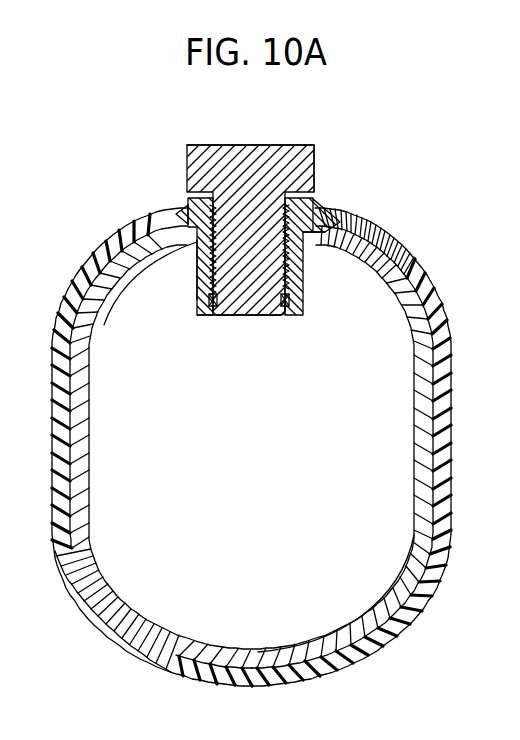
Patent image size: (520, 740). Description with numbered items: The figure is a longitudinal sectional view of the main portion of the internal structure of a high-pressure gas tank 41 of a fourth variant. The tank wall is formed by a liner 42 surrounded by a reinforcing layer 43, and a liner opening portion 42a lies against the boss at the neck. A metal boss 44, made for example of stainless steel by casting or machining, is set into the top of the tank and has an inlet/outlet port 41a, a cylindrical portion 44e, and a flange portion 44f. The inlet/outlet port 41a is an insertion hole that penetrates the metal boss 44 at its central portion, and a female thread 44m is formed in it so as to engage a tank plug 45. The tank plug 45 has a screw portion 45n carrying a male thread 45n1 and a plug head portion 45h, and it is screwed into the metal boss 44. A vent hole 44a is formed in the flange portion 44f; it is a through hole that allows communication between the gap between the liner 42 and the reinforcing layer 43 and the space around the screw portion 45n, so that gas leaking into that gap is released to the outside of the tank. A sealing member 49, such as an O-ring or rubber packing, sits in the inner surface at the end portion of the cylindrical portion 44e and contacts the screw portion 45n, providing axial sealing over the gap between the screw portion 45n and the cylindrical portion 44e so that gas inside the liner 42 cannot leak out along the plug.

The high-pressure gas tank 41 is at (276, 447).
The inlet/outlet port 41a is at (218, 318).
The liner 42 is at (413, 416).
The liner opening portion 42a is at (310, 247).
The reinforcing layer 43 is at (451, 414).
The metal boss 44 is at (242, 246).
The vent hole 44a is at (178, 213).
The cylindrical portion 44e is at (197, 268).
The flange portion 44f is at (326, 212).
The female thread 44m is at (205, 304).
The tank plug 45 is at (246, 257).
The plug head portion 45h is at (190, 168).
The screw portion 45n is at (248, 317).
The male thread 45n1 is at (284, 318).
The sealing member 49 is at (291, 305).